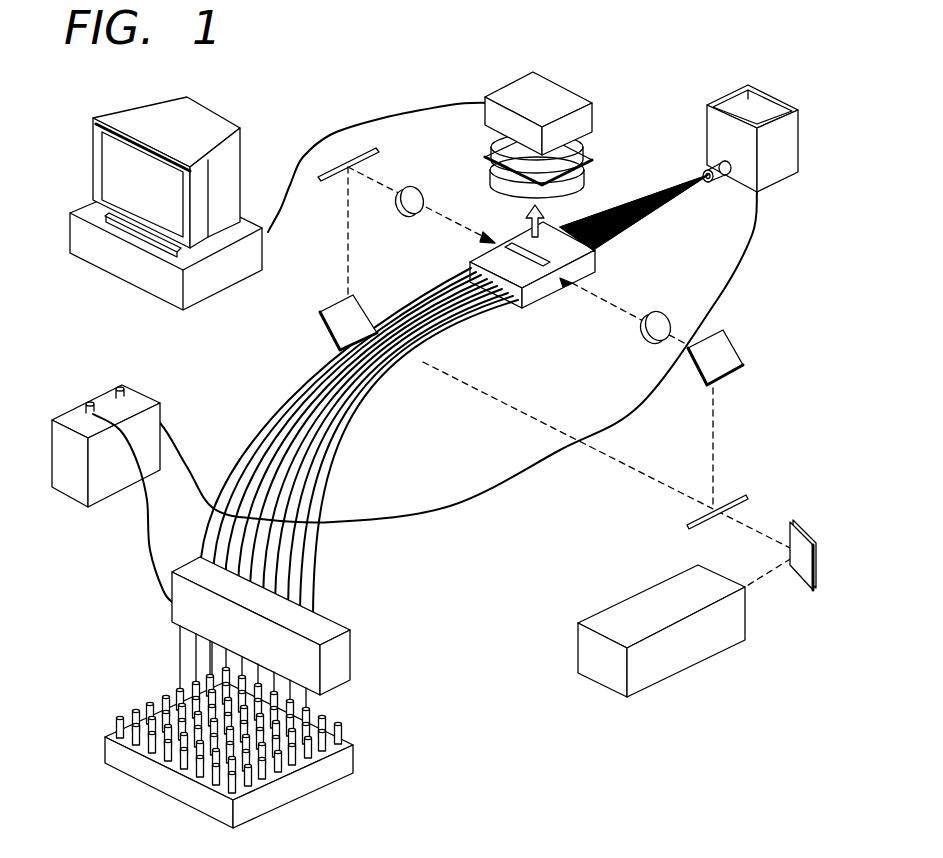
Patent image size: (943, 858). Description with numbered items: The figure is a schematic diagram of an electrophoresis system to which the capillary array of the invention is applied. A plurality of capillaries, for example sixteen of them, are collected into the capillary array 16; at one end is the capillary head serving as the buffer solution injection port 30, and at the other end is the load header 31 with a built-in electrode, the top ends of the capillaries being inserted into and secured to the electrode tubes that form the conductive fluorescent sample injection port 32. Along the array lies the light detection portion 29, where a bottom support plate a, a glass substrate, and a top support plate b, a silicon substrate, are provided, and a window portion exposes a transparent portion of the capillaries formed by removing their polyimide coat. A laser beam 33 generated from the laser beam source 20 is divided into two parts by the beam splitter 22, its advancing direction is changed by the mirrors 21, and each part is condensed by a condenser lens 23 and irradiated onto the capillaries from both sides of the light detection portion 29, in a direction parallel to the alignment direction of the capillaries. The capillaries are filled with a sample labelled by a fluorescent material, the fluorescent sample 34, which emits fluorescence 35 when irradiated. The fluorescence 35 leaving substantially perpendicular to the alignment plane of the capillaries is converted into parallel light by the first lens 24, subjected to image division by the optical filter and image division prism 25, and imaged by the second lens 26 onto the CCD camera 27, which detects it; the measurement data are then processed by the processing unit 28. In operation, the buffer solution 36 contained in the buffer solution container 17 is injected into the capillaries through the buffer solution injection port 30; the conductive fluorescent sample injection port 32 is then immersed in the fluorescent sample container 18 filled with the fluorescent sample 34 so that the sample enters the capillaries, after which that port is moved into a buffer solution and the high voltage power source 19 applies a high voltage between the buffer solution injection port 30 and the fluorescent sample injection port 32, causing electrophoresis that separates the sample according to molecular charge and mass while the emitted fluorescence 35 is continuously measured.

The optical fiber bundle 16 is at (374, 414).
The buffer solution container 17 is at (795, 182).
The fluorescent sample container 18 is at (227, 747).
The high voltage power source 19 is at (68, 415).
The laser beam source 20 is at (700, 650).
The mirror 21 is at (349, 162).
The beam splitter 22 is at (738, 497).
The condenser lens 23 is at (414, 216).
The first lens 24 is at (592, 173).
The optical filter and image division prism 25 is at (588, 160).
The second lens 26 is at (500, 142).
The CCD camera 27 is at (565, 95).
The processing unit 28 is at (208, 118).
The light detection portion 29 is at (542, 302).
The buffer solution injection port 30 is at (706, 166).
The load header 31 is at (345, 660).
The conductive fluorescent sample injection port 32 is at (198, 655).
The laser beam 33 is at (757, 580).
The fluorescent sample 34 is at (132, 712).
The fluorescence 35 is at (525, 226).
The buffer solution 36 is at (739, 92).
The bottom support plate a is at (600, 262).
The top support plate b is at (558, 228).